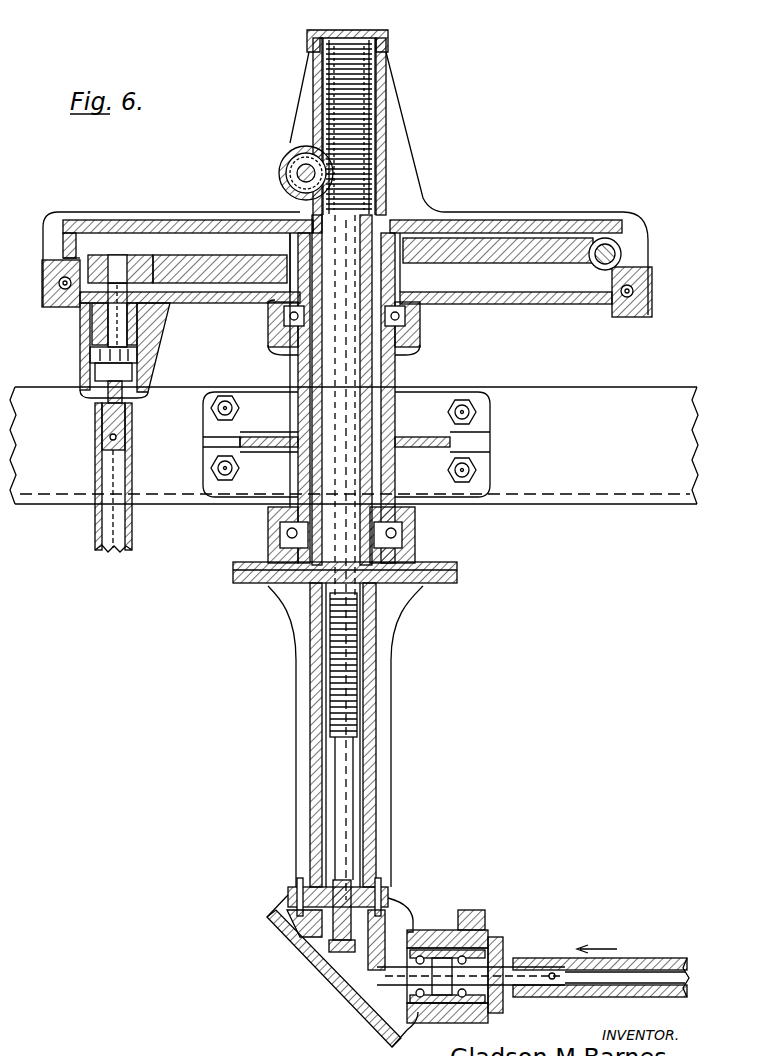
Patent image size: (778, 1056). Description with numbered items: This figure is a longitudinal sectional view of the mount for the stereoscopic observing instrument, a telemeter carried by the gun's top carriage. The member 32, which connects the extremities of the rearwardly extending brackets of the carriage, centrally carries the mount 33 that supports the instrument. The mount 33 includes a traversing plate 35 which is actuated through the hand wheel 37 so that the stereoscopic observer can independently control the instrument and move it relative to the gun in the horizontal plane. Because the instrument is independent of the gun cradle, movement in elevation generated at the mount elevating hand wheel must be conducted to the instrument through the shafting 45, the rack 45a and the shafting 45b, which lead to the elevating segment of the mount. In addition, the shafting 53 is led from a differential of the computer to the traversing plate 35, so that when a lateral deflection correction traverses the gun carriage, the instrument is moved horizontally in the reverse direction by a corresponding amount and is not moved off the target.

The rack 45a is at (360, 132).
The shafting 45b is at (298, 170).
The traversing plate 35 is at (112, 228).
The hand wheel 37 is at (615, 252).
The mount 33 is at (160, 338).
The member 32 is at (354, 445).
The shafting 53 is at (95, 528).
The shafting 45 is at (357, 714).